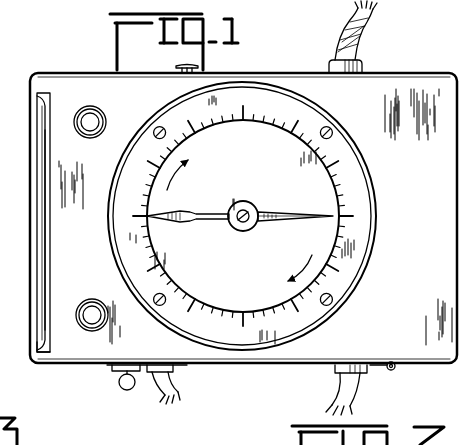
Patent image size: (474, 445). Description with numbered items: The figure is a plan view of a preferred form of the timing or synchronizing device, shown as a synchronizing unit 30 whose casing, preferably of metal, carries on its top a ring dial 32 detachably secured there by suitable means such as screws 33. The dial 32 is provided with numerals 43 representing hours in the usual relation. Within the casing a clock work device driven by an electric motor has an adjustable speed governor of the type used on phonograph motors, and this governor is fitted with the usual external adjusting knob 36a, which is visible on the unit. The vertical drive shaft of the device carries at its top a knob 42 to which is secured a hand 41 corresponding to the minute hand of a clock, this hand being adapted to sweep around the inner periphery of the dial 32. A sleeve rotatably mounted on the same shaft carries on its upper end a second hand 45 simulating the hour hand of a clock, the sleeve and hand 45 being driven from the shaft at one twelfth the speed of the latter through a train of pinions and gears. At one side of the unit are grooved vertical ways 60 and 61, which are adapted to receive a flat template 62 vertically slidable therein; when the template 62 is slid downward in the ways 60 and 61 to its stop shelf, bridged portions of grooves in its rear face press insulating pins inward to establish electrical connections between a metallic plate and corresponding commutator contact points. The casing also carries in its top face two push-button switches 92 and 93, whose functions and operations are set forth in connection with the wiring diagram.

The synchronizing unit 30 is at (400, 70).
The ring dial 32 is at (363, 187).
The screws 33 is at (329, 130).
The external adjusting knob 36a is at (180, 63).
The hand 41 is at (291, 212).
The knob 42 is at (248, 207).
The numerals 43 is at (362, 224).
The hand 45 is at (212, 211).
The grooved vertical way 60 is at (38, 106).
The grooved vertical way 61 is at (47, 338).
The flat template 62 is at (44, 277).
The push-button switch 92 is at (96, 112).
The push-button switch 93 is at (98, 300).